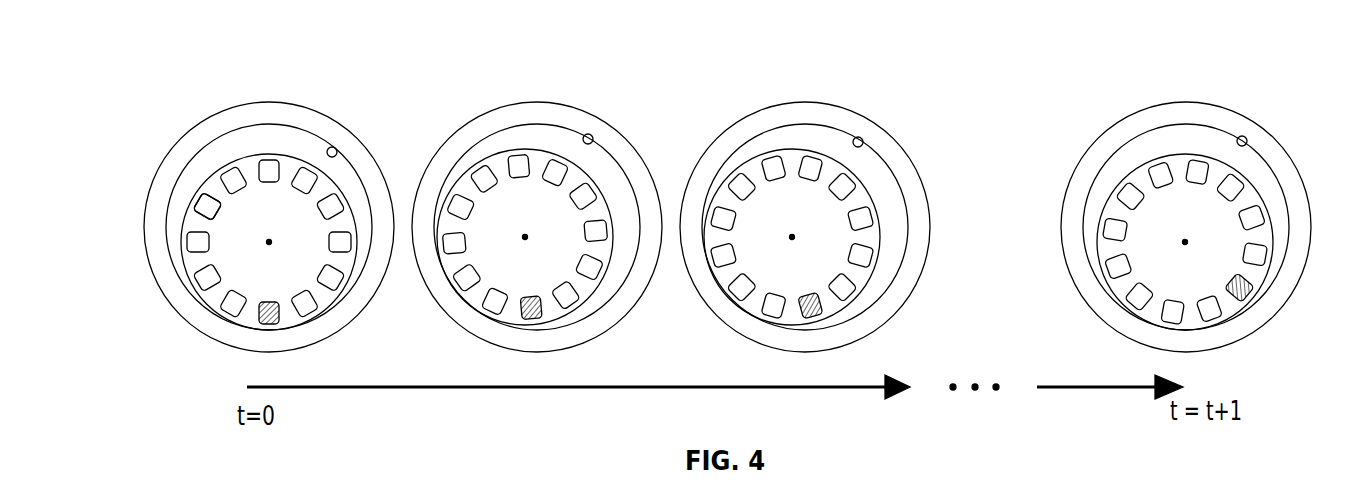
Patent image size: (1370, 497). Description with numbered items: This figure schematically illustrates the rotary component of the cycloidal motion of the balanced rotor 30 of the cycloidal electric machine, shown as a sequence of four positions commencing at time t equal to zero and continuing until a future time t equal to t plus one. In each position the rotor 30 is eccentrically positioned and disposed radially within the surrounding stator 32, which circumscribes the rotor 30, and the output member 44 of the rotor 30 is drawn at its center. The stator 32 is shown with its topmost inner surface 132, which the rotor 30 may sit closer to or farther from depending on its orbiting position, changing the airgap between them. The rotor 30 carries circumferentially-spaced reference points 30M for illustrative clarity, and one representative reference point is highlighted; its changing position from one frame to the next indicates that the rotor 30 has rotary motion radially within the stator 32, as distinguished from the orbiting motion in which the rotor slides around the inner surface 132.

The balanced rotor 30 is at (282, 228).
The circumferentially-spaced reference points 30M is at (200, 206).
The stator 32 is at (1185, 112).
The output member 44 is at (268, 247).
The topmost inner surface 132 is at (335, 148).